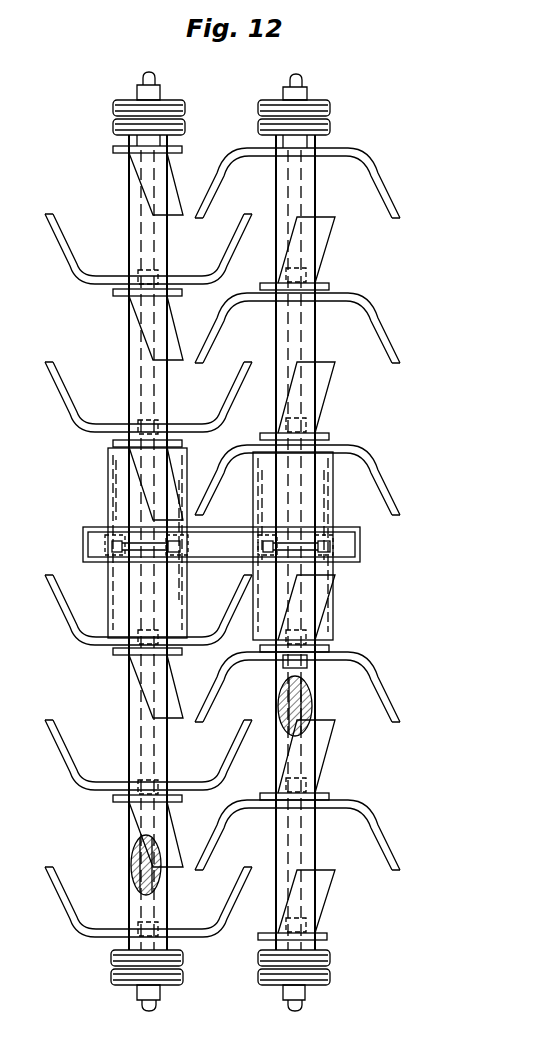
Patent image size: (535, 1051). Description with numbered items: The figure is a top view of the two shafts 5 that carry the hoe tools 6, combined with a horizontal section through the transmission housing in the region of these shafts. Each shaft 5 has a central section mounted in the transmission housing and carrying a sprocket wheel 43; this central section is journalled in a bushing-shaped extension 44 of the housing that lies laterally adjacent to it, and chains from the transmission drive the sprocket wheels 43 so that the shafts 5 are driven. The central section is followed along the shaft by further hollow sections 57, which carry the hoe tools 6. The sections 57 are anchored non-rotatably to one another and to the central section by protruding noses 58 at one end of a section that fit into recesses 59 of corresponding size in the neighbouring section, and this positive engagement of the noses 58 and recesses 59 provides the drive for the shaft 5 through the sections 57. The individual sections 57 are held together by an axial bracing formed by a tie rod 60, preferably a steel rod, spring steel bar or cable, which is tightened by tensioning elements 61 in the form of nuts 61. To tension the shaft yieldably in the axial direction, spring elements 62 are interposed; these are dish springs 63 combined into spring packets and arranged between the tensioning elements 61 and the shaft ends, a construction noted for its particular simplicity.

The shaft 5 is at (302, 196).
The hoe tool 6 is at (382, 292).
The section 57 is at (305, 336).
The sprocket wheel 43 is at (115, 545).
The bushing-shaped extension 44 is at (115, 596).
The nose 58 is at (290, 660).
The recess 59 is at (300, 665).
The tie rod 60 is at (306, 704).
The tensioning element 61 is at (152, 990).
The spring element 62 is at (112, 987).
The dish spring 63 is at (328, 960).